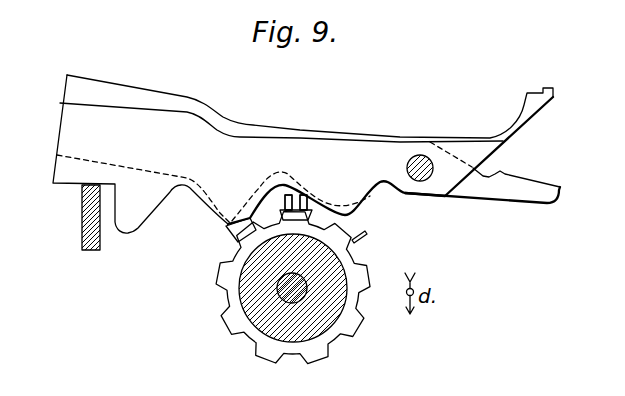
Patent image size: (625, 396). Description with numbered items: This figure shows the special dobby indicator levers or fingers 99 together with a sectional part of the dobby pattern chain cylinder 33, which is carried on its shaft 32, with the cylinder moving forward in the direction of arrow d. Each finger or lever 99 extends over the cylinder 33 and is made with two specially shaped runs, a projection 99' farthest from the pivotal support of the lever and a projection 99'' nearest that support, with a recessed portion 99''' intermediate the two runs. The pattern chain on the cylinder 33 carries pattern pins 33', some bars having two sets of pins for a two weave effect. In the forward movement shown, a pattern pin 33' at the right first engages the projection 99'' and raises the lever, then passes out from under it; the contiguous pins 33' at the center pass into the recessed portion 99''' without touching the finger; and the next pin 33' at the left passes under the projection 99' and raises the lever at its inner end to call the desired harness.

The dobby finger or lever 99 is at (320, 159).
The run or projection 99' is at (214, 237).
The run or projection 99'' is at (385, 230).
The recessed portion 99''' is at (306, 160).
The pattern pins 33' is at (310, 181).
The dobby pattern chain cylinder 33 is at (289, 288).
The shaft 32 is at (280, 294).